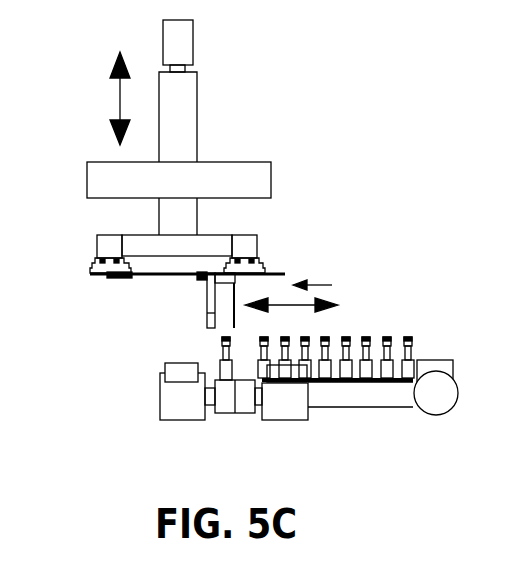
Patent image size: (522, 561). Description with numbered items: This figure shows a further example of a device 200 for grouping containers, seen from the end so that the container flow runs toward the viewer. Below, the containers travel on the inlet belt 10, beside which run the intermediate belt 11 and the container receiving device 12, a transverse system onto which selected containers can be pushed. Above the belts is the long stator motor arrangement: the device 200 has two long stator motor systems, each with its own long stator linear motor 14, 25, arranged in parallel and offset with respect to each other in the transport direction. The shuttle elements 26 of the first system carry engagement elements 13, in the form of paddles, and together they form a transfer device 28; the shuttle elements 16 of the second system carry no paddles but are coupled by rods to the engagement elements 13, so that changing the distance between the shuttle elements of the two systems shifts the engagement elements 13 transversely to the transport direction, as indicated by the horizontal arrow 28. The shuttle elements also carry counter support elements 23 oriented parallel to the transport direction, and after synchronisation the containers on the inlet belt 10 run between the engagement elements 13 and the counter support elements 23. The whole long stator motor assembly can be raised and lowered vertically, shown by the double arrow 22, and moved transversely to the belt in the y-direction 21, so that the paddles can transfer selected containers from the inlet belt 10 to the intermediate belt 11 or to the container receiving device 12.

The device for grouping containers 200 is at (329, 77).
The vertical direction 22 is at (118, 98).
The long stator linear motor 14 is at (258, 246).
The long stator linear motor 25 is at (96, 247).
The shuttle elements 26 is at (284, 272).
The shuttle elements 16 is at (90, 273).
The counter support elements 23 is at (207, 292).
The engagement elements 13 is at (207, 313).
The transfer device 28 is at (325, 285).
The y-direction 21 is at (297, 306).
The inlet belt 10 is at (165, 367).
The intermediate belt 11 is at (244, 400).
The container receiving device 12 is at (432, 405).